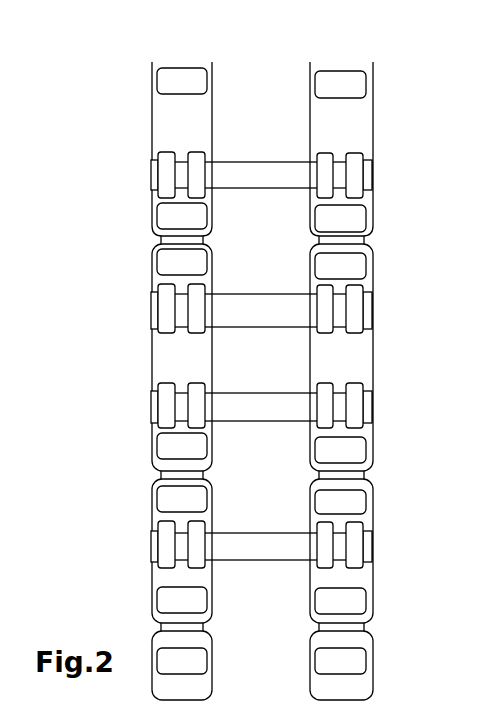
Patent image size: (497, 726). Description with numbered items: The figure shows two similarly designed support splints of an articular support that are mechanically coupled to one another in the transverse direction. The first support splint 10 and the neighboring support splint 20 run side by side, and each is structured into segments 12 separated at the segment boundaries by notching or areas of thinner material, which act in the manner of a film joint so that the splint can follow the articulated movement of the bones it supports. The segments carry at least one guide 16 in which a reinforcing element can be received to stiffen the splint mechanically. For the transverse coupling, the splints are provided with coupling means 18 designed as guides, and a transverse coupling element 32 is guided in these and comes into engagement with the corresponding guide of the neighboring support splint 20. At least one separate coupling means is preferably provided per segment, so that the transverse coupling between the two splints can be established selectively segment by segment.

The support splint 10 is at (152, 128).
The segments 12 is at (158, 277).
The guide 16 is at (168, 494).
The coupling means 18 is at (168, 185).
The neighboring support splint 20 is at (374, 307).
The transverse coupling element 32 is at (287, 177).